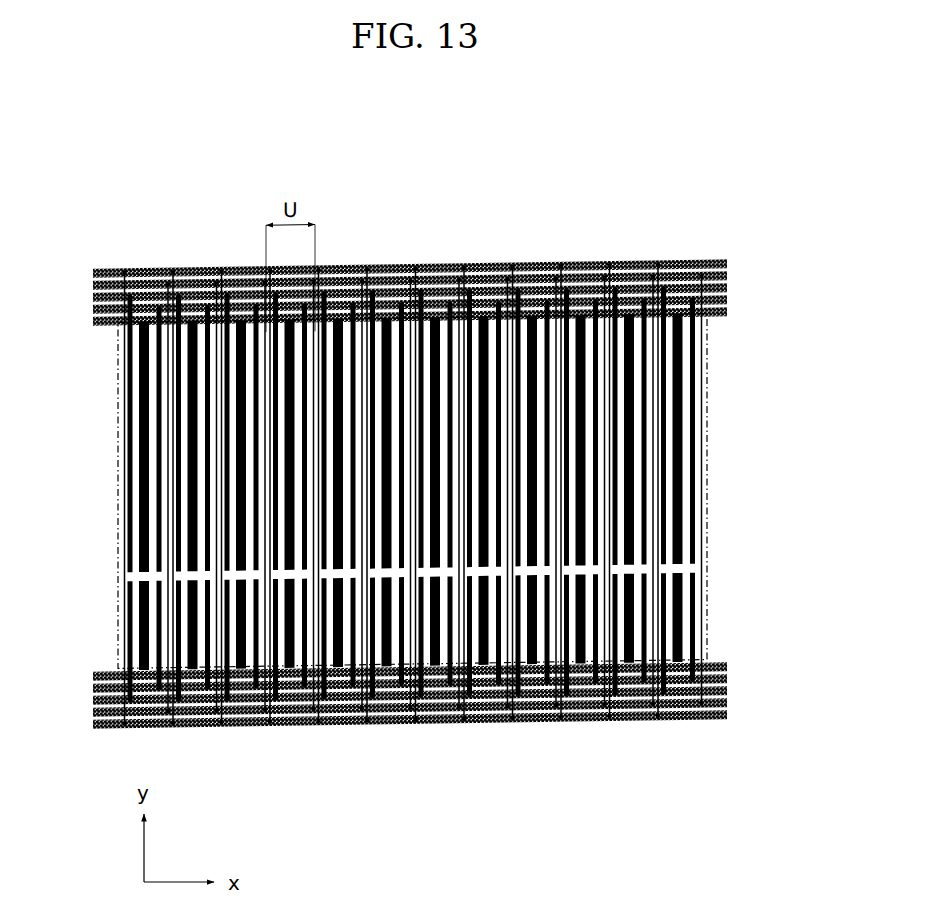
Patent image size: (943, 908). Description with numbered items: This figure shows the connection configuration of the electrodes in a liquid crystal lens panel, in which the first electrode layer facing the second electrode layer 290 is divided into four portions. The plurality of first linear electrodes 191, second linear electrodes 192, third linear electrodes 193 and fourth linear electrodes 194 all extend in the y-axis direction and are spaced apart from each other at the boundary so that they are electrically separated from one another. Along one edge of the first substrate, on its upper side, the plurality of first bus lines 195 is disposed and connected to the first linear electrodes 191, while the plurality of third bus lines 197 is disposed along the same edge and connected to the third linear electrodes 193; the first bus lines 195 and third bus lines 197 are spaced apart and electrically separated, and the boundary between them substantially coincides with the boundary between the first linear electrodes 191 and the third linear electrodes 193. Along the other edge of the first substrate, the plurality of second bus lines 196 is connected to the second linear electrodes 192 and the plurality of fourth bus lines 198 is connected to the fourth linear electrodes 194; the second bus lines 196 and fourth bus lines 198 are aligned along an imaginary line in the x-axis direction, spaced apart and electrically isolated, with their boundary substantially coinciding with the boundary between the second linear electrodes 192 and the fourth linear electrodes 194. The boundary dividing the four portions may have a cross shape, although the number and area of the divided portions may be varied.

The first linear electrodes 191 is at (133, 428).
The second linear electrodes 192 is at (133, 614).
The third linear electrodes 193 is at (686, 427).
The fourth linear electrodes 194 is at (686, 618).
The first bus lines 195 is at (93, 316).
The second bus lines 196 is at (93, 672).
The third bus lines 197 is at (727, 268).
The fourth bus lines 198 is at (727, 672).
The second electrode layer 290 is at (708, 488).